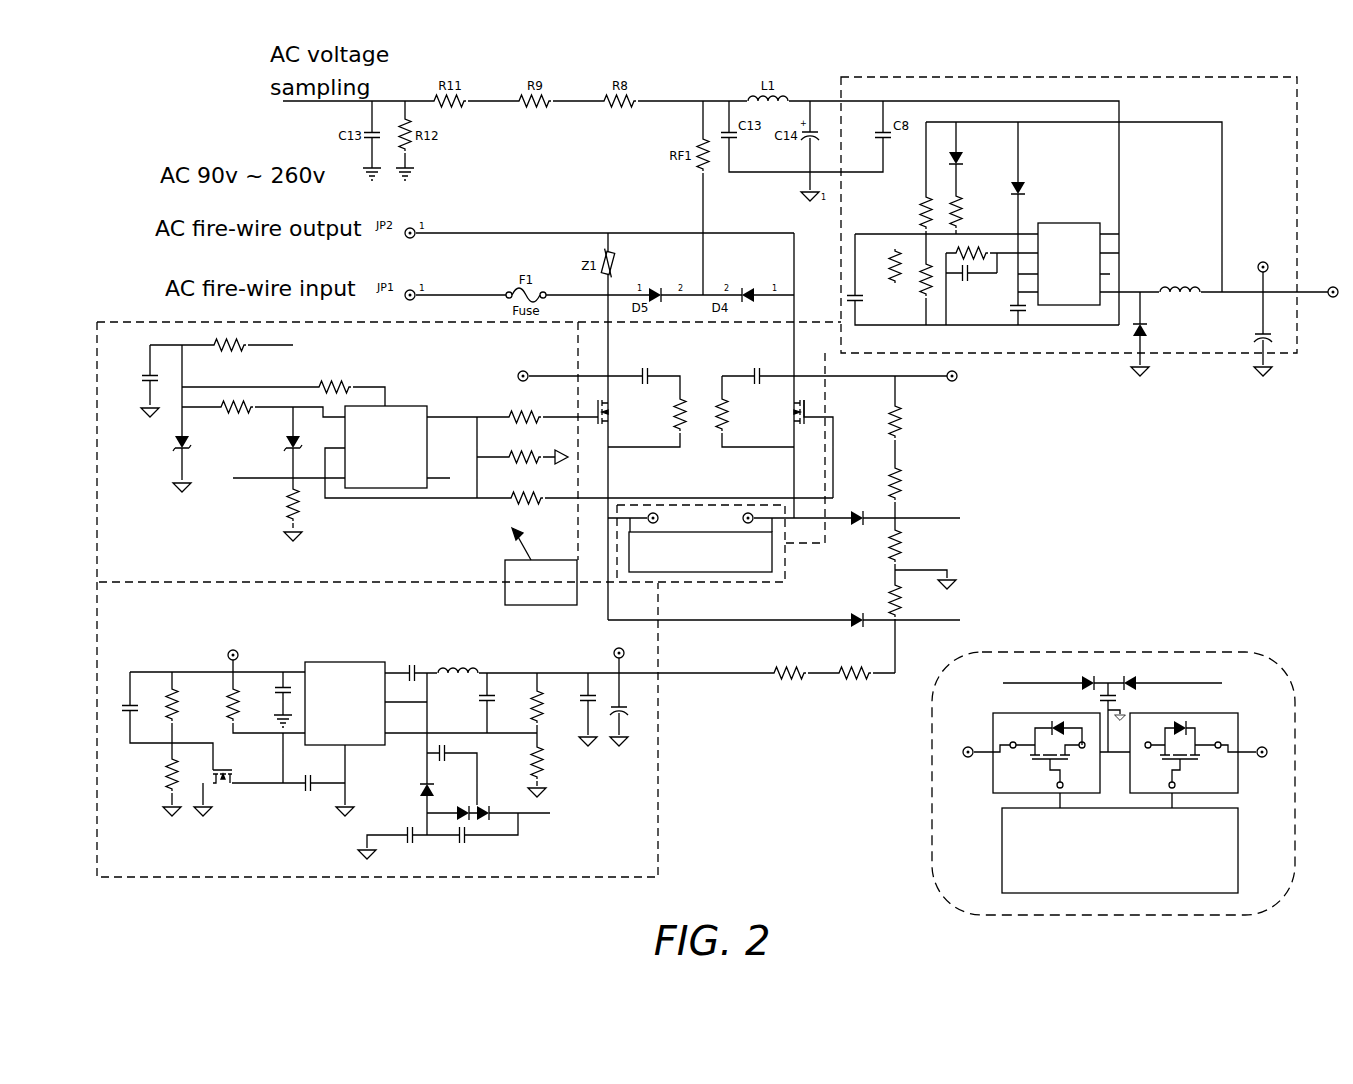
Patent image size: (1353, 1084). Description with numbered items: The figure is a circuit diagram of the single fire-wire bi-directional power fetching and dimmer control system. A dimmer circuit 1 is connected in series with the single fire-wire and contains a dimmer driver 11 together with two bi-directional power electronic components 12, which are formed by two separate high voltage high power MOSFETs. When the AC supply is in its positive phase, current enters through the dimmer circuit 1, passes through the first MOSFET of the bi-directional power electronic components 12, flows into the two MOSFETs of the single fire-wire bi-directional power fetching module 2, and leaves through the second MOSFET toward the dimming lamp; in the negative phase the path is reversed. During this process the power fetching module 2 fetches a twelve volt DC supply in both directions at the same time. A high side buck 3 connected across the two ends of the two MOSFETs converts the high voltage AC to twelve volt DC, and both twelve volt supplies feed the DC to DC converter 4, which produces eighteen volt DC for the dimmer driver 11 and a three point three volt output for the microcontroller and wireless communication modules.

The dimmer circuit 1 is at (150, 317).
The dimmer driver 11 is at (116, 455).
The bi-directional power electronic components 12 is at (600, 395).
The single fire-wire bi-directional power fetching module 2 is at (750, 558).
The high side buck 3 is at (1069, 337).
The DC to DC converter 4 is at (118, 633).